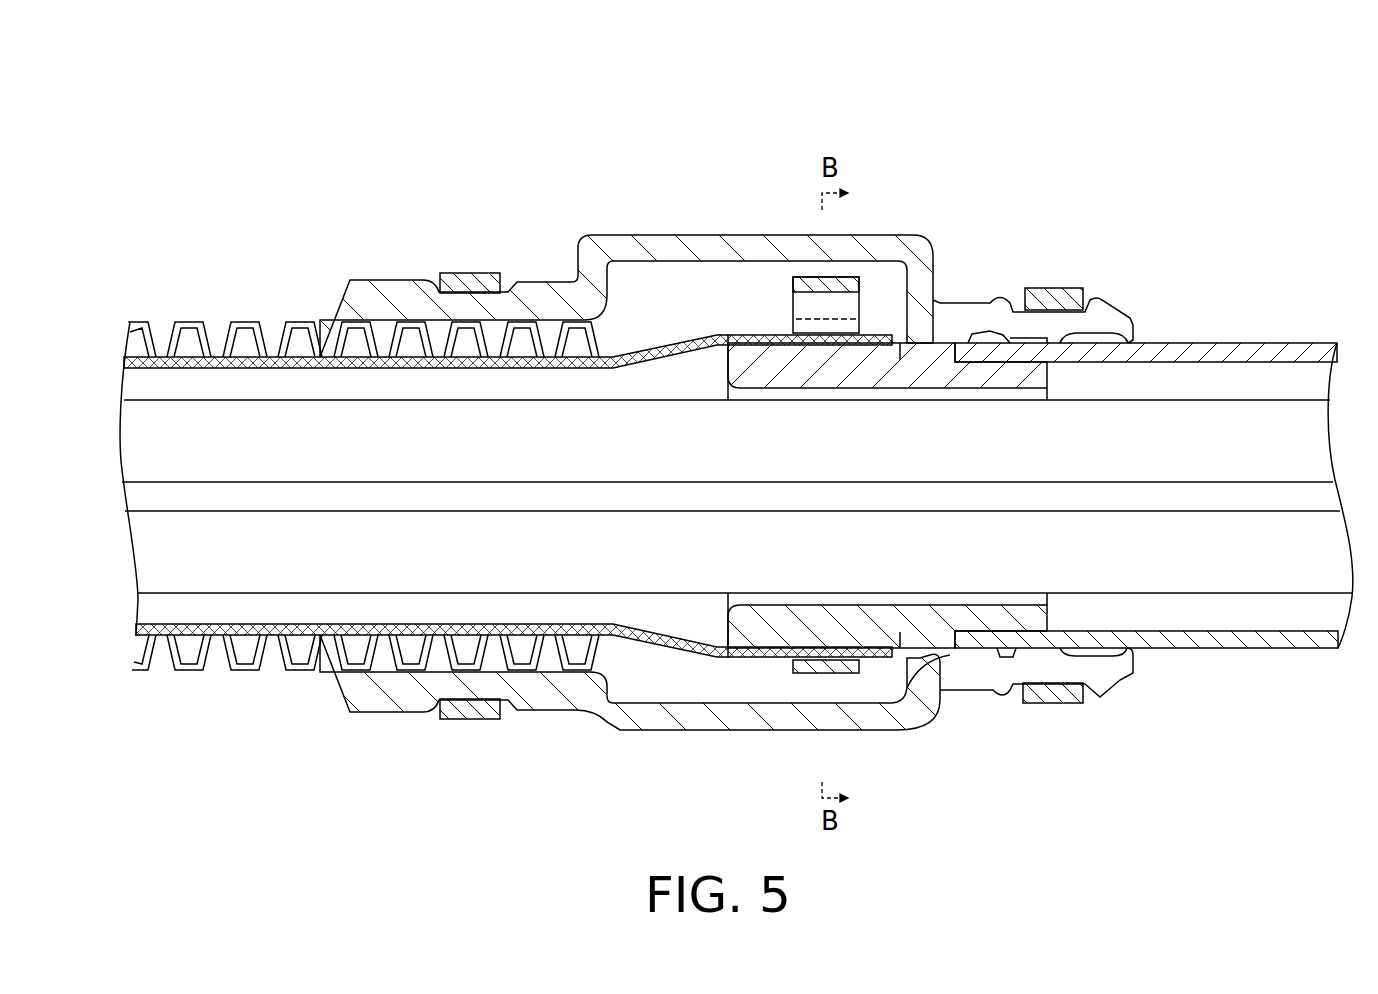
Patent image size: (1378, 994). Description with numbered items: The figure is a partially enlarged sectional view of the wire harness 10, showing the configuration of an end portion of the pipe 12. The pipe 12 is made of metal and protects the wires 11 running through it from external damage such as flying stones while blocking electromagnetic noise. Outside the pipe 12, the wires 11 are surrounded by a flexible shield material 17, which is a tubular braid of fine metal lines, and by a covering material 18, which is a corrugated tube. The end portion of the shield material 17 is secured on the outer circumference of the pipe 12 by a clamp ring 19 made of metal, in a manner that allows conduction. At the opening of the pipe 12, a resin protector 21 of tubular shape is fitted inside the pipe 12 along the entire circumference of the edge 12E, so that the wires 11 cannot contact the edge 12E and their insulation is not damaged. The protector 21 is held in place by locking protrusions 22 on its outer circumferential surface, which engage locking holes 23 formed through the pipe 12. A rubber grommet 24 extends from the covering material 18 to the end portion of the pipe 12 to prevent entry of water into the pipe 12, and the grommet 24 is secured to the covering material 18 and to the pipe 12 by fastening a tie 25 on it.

The wire harness 10 is at (498, 112).
The wire 11 is at (1280, 558).
The pipe 12 is at (1215, 348).
The edge of the pipe 12E is at (745, 364).
The shield material 17 is at (246, 324).
The covering material 18 is at (307, 330).
The clamp ring 19 is at (843, 298).
The protector 21 is at (1000, 375).
The locking protrusion 22 is at (927, 645).
The locking hole 23 is at (945, 660).
The grommet 24 is at (541, 282).
The tie 25 is at (474, 719).